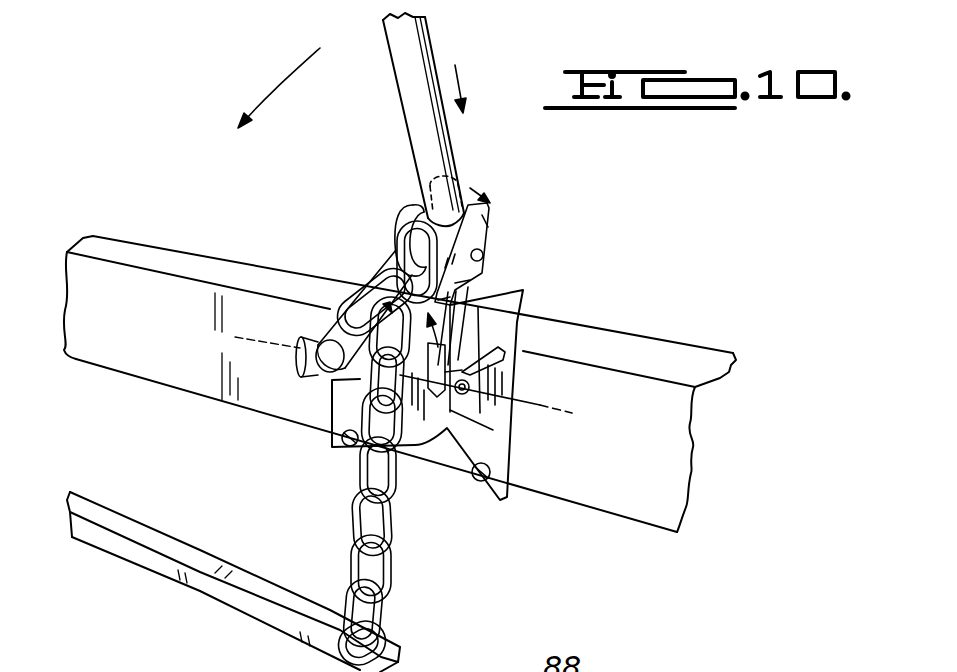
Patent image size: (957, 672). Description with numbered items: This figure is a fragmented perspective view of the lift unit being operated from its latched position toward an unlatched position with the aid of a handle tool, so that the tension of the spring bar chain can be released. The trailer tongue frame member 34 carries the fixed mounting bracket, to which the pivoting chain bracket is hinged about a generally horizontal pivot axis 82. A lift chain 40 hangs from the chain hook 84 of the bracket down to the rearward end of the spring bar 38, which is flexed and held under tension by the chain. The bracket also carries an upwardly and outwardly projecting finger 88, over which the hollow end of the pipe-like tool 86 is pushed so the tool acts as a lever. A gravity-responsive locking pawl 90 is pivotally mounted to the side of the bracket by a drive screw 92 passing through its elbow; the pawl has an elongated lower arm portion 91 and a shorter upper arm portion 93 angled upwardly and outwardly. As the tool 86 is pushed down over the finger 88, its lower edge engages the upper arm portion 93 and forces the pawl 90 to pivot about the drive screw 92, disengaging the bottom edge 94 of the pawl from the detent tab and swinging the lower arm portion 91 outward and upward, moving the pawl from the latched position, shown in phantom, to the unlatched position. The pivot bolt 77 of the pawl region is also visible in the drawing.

The frame member 34 is at (122, 323).
The spring bar 38 is at (125, 530).
The lift chain 40 is at (357, 525).
The pivot bolt / pawl 77 is at (473, 374).
The pivot axis 82 is at (553, 417).
The chain hook 84 is at (407, 222).
The tool 86 is at (415, 122).
The finger 88 is at (430, 193).
The locking pawl 90 is at (502, 243).
The lower arm portion 91 is at (460, 283).
The drive screw 92 is at (483, 255).
The upper arm portion 93 is at (488, 226).
The bottom edge 94 is at (442, 298).